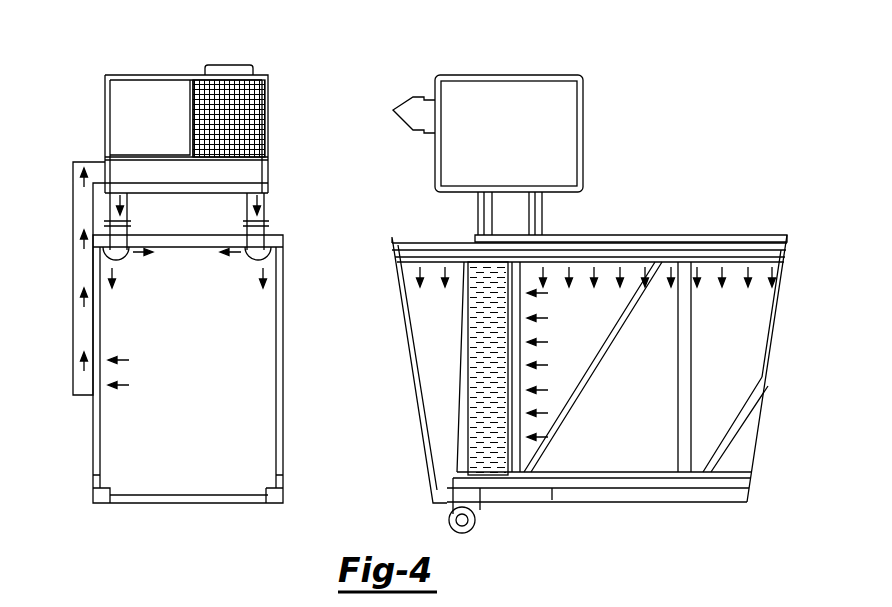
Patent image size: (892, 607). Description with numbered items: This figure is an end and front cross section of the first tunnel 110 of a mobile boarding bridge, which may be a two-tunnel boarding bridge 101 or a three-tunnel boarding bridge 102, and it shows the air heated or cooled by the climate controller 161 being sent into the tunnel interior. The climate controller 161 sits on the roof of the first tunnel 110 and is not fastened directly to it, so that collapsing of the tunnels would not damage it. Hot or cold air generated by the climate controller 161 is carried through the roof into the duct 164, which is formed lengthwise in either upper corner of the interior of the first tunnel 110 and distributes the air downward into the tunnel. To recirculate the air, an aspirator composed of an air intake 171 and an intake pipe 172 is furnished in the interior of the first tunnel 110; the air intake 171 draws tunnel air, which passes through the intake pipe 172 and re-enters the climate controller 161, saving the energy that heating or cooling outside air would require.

The 2-tunnel mobile boarding bridge 101 is at (412, 291).
The 3-tunnel boarding bridge 102 is at (736, 211).
The first tunnel 110 is at (283, 396).
The climate controller 161 is at (268, 107).
The duct 164 is at (103, 257).
The air intake 171 is at (494, 465).
The intake pipe 172 is at (84, 298).